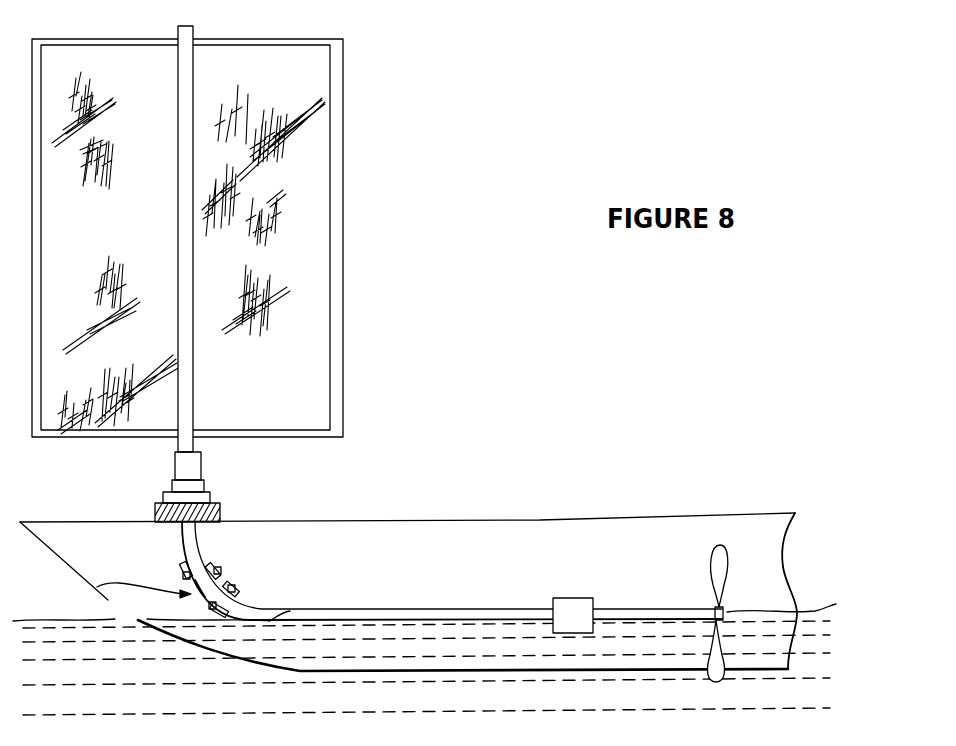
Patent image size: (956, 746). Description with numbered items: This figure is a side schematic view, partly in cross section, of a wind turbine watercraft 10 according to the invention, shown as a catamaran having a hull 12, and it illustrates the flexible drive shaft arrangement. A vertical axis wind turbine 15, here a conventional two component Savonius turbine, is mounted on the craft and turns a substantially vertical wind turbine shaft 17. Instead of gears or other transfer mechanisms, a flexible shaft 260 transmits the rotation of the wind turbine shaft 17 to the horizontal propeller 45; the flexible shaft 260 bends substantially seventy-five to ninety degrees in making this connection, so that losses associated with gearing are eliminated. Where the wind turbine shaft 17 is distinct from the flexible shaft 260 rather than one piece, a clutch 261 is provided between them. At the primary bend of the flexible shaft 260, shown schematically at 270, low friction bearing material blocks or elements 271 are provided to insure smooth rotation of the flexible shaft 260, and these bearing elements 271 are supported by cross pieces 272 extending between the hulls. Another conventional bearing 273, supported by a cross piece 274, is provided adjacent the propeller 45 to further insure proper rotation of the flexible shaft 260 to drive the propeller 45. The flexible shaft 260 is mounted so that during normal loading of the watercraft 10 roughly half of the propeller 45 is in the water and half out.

The watercraft 10 is at (408, 505).
The hull 12 is at (522, 545).
The vertical axis wind turbine 15 is at (393, 87).
The wind turbine shaft 17 is at (185, 403).
The horizontal propeller 45 is at (715, 552).
The flexible shaft 260 is at (192, 538).
The clutch 261 is at (194, 468).
The primary bend 270 is at (97, 587).
The low friction bearing material blocks 271 is at (183, 574).
The cross pieces 272 is at (185, 590).
The conventional bearing 273 is at (600, 586).
The cross piece 274 is at (563, 605).